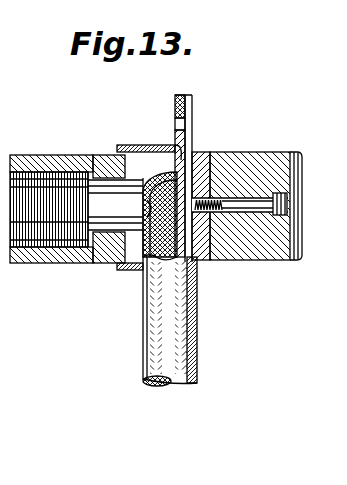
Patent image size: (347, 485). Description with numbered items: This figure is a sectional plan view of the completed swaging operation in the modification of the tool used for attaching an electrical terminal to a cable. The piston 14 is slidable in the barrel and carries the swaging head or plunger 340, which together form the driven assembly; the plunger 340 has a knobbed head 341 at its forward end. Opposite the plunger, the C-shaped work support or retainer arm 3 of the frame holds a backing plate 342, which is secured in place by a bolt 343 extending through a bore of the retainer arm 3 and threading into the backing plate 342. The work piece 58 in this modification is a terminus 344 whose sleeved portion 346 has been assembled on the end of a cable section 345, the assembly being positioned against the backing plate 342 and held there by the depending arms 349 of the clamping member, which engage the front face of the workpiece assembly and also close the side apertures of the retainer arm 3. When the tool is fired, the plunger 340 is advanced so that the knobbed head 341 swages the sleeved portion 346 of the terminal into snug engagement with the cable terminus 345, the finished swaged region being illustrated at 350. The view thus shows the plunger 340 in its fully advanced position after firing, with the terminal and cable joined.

The work support 3 is at (252, 167).
The piston 14 is at (89, 178).
The work piece 58 is at (202, 122).
The swaging head or plunger 340 is at (100, 262).
The knobbed head 341 is at (135, 218).
The backing plate 342 is at (213, 258).
The bolt 343 is at (259, 202).
The terminus 344 is at (193, 142).
The cable section 345 is at (198, 277).
The sleeved portion 346 is at (143, 238).
The depending arms 349 is at (143, 133).
The swaged engagement 350 is at (199, 158).